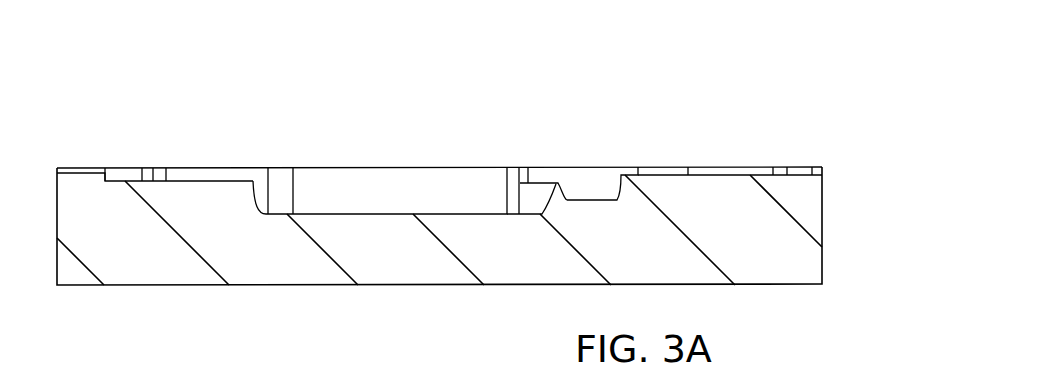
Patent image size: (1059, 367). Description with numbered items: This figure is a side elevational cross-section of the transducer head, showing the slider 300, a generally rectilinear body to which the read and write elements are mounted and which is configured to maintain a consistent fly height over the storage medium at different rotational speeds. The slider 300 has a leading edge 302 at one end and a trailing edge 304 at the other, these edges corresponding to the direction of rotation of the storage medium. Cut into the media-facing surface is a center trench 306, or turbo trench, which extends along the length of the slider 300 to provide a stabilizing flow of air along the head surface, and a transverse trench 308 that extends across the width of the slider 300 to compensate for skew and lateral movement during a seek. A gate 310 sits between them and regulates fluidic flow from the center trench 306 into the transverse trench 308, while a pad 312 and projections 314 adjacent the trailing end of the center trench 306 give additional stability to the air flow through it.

The slider 300 is at (237, 54).
The leading edge 302 is at (822, 190).
The trailing edge 304 is at (57, 193).
The center trench 306 is at (378, 213).
The transverse trench 308 is at (593, 200).
The gate 310 is at (557, 183).
The pad 312 is at (167, 167).
The projections 314 is at (257, 167).